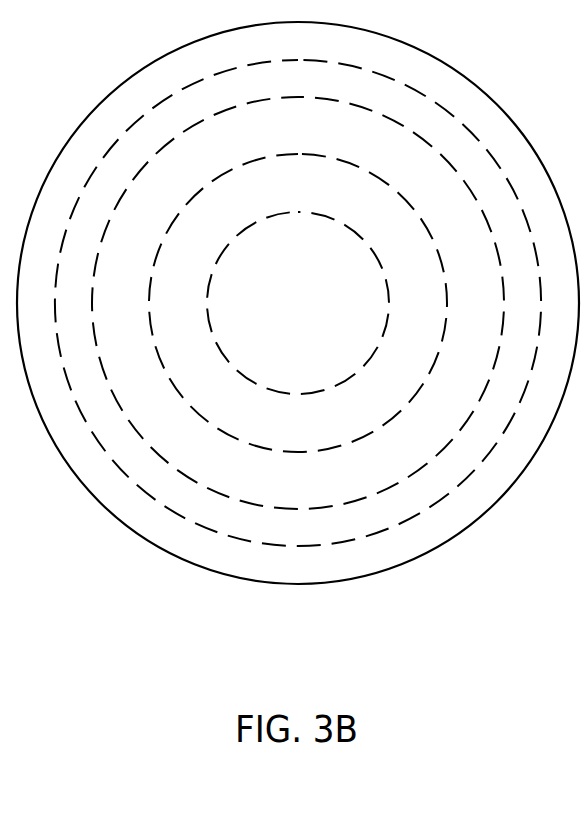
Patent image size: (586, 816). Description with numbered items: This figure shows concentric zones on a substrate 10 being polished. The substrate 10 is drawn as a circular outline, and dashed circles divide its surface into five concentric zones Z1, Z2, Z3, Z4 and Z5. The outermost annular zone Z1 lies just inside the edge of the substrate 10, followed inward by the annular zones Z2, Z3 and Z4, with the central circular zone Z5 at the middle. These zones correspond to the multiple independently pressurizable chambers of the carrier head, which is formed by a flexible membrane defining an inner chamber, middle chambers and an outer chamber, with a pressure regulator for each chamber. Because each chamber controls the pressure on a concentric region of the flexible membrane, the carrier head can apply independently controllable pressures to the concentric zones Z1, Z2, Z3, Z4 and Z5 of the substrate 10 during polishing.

The substrate 10 is at (433, 550).
The first concentric zone Z1 is at (139, 509).
The second concentric zone Z2 is at (204, 508).
The third concentric zone Z3 is at (298, 490).
The fourth concentric zone Z4 is at (335, 415).
The fifth concentric zone Z5 is at (339, 300).